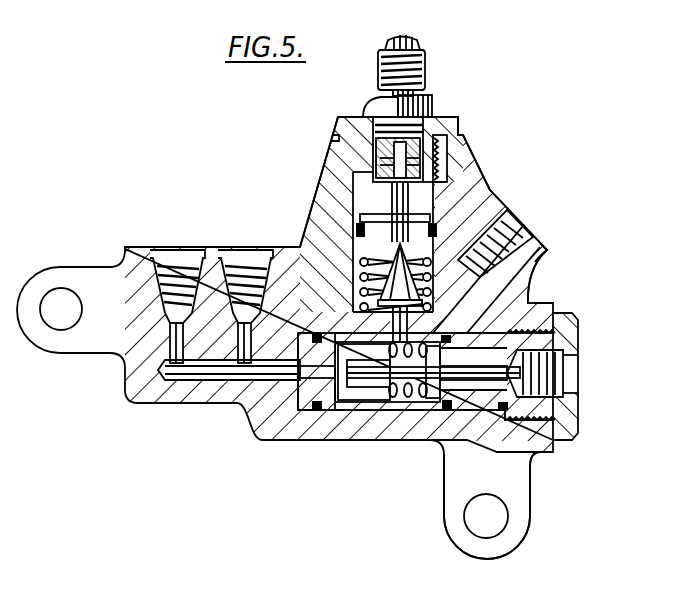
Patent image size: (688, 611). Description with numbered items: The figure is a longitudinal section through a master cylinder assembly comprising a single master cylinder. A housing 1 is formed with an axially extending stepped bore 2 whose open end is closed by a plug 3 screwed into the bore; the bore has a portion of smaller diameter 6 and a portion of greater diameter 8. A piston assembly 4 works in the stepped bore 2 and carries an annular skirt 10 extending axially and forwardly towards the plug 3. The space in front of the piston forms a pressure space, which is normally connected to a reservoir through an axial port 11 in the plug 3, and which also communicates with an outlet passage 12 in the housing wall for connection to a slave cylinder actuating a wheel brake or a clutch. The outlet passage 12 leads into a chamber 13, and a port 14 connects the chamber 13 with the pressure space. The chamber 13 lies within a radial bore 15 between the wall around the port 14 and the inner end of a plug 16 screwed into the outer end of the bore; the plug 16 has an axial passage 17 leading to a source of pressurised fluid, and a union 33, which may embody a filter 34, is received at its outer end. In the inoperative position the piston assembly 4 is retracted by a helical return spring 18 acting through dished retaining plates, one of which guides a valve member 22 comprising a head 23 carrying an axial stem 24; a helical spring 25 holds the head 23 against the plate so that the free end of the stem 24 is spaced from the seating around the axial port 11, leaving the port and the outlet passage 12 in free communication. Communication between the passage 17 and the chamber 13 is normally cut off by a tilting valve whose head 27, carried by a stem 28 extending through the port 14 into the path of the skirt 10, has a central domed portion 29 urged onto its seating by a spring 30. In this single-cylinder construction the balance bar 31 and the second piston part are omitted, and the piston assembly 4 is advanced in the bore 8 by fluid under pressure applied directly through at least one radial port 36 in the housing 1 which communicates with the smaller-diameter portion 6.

The housing 1 is at (350, 430).
The stepped bore 2 is at (418, 425).
The plug 3 is at (578, 415).
The piston assembly 4 is at (293, 387).
The portion of the bore of smaller diameter 6 is at (200, 382).
The portion of the bore of greater diameter 8 is at (383, 440).
The annular skirt 10 is at (405, 440).
The axial port 11 is at (540, 456).
The outlet passage 12 is at (512, 226).
The chamber 13 is at (246, 323).
The port 14 is at (525, 292).
The radial bore 15 is at (327, 246).
The plug 16 is at (332, 152).
The axial passage 17 is at (463, 168).
The helical return spring 18 is at (437, 450).
The valve member 22 is at (432, 440).
The head 23 is at (368, 440).
The stem 24 is at (557, 309).
The helical spring 25 is at (322, 420).
The head 27 is at (357, 240).
The stem 28 is at (545, 250).
The central domed portion 29 is at (340, 190).
The spring 30 is at (492, 196).
The balance bar 31 is at (332, 136).
The union 33 is at (430, 103).
The filter 34 is at (455, 131).
The radial port 36 is at (178, 323).